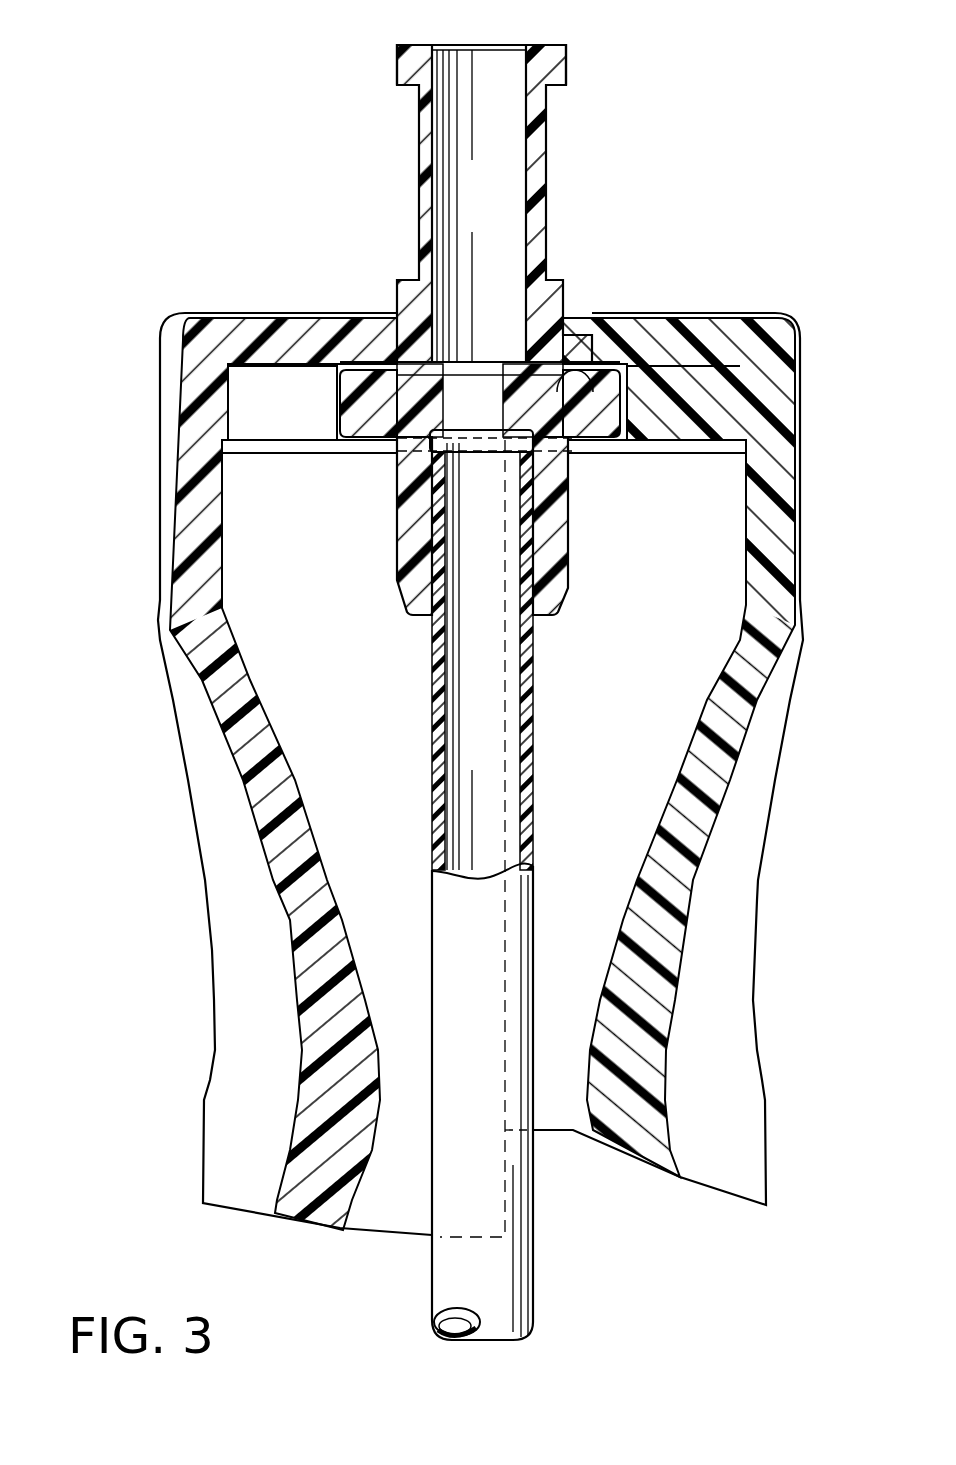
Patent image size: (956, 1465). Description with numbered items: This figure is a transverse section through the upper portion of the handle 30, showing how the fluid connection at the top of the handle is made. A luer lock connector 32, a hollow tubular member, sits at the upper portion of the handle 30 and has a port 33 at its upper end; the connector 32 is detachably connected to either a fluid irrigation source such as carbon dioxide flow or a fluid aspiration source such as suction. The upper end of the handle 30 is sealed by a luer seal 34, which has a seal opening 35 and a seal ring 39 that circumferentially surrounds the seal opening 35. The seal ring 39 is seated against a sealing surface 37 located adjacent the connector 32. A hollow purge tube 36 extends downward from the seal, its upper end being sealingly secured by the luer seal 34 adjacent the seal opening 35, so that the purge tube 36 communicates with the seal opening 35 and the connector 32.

The handle 30 is at (133, 404).
The luer lock connector 32 is at (548, 142).
The port 33 is at (505, 48).
The luer seal 34 is at (572, 505).
The seal opening 35 is at (452, 402).
The purge tube 36 is at (465, 1280).
The sealing surface 37 is at (563, 372).
The seal ring 39 is at (388, 370).